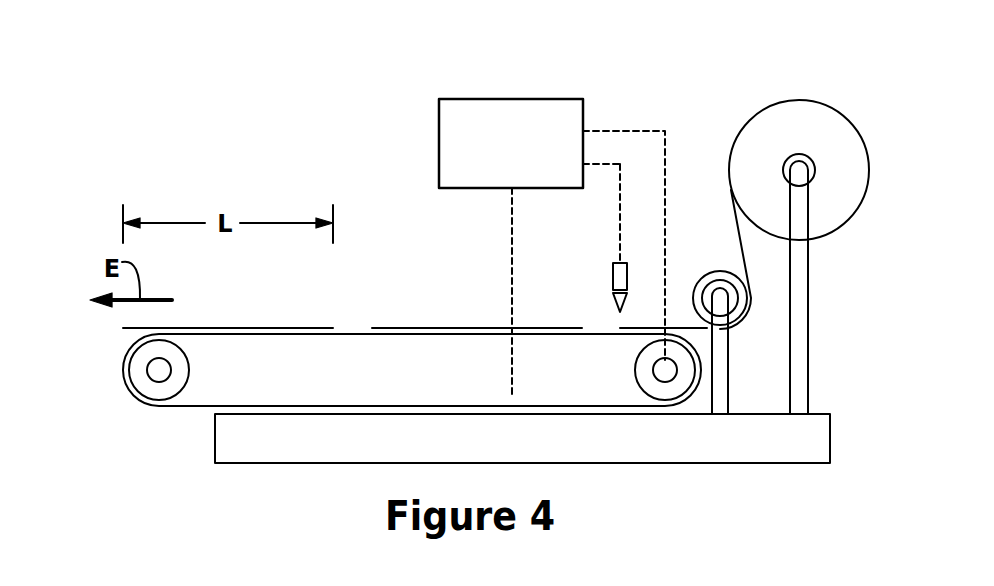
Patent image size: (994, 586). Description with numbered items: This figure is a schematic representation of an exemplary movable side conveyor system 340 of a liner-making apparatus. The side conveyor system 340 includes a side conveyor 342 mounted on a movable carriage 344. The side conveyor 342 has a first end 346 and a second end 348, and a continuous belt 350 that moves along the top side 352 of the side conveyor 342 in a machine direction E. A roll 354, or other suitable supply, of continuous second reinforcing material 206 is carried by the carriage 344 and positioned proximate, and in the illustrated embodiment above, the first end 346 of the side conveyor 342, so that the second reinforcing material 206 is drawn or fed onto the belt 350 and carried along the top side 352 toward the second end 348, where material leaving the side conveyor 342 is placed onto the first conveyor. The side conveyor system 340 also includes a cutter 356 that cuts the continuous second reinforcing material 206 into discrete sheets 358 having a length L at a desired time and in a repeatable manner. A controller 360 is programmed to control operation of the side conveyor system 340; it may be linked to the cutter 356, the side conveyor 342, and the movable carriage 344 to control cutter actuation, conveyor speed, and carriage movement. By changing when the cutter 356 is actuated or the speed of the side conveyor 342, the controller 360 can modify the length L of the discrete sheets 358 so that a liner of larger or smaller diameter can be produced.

The movable side conveyor system 340 is at (296, 86).
The side conveyor 342 is at (258, 370).
The movable carriage 344 is at (273, 432).
The first end 346 is at (668, 428).
The second end 348 is at (120, 405).
The continuous belt 350 is at (353, 330).
The top side 352 is at (338, 302).
The roll 354 is at (823, 128).
The cutter 356 is at (613, 276).
The discrete sheets 358 is at (200, 328).
The controller 360 is at (488, 99).
The second reinforcing material 206 is at (823, 80).